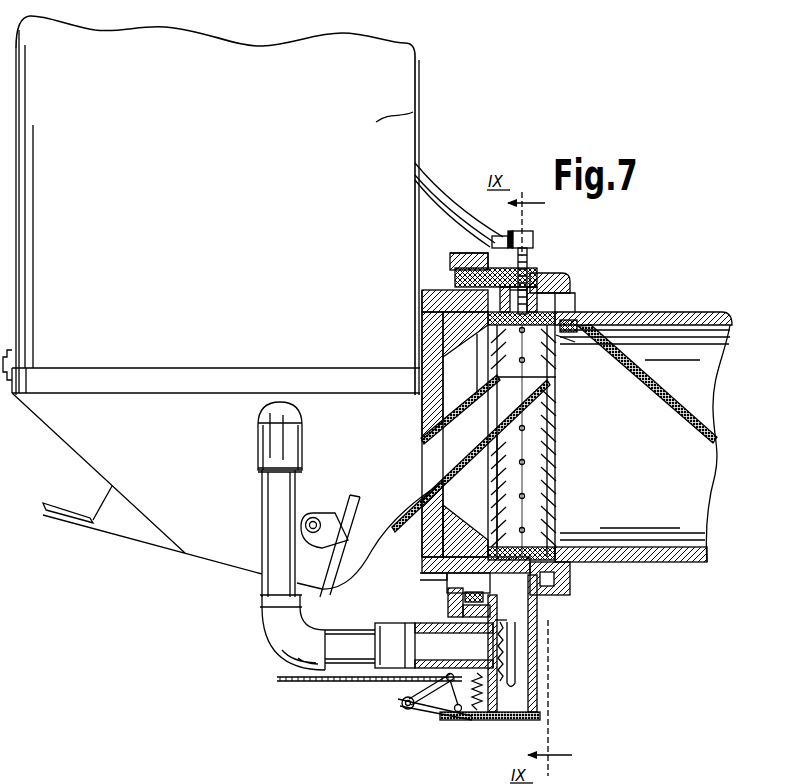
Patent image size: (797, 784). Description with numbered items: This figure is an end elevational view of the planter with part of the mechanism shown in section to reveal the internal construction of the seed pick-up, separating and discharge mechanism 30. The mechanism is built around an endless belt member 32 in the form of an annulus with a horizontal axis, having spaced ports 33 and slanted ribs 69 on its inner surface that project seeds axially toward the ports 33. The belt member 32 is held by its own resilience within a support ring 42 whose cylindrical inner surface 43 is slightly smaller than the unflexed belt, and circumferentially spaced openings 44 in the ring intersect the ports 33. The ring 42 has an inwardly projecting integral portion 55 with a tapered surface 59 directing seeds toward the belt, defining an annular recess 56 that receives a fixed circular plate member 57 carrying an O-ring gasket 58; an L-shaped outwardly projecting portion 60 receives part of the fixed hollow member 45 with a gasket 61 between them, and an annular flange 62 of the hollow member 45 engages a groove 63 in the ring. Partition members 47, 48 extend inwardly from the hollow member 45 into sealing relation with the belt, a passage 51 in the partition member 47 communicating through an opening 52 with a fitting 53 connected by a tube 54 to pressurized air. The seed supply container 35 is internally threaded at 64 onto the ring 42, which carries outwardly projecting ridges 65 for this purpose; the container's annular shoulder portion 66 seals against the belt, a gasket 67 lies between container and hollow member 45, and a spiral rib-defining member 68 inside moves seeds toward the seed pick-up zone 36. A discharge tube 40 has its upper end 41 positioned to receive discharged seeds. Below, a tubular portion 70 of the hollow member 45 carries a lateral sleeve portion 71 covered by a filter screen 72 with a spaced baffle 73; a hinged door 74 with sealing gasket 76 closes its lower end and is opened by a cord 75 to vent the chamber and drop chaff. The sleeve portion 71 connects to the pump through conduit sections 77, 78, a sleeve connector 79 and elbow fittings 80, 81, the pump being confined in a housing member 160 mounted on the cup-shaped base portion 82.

The seed pick-up, separating and discharge mechanism 30 is at (424, 76).
The housing member 160 is at (413, 113).
The base portion 82 is at (138, 455).
The elbow fitting 81 is at (272, 433).
The conduit section 78 is at (280, 537).
The elbow fitting 80 is at (286, 629).
The conduit section 77 is at (356, 649).
The sleeve connector 79 is at (388, 647).
The cord 75 is at (315, 682).
The tubular portion 70 is at (536, 668).
The baffle 73 is at (511, 645).
The filter screen 72 is at (502, 670).
The sealing gasket 76 is at (540, 714).
The sleeve portion 71 is at (418, 684).
The hinged door 74 is at (470, 720).
The partition member 48 is at (476, 582).
The gasket 61 is at (462, 600).
The radially outwardly projecting portion 60 is at (455, 614).
The openings 44 is at (505, 597).
The annular recess 56 is at (427, 328).
The fixed circular plate member 57 is at (424, 413).
The integral portion 55 is at (455, 330).
The partition member 47 is at (462, 258).
The cylindrical inner surface 43 is at (465, 353).
The O-ring gasket 58 is at (442, 550).
The tube 54 is at (442, 196).
The fitting 53 is at (531, 231).
The opening 52 is at (529, 282).
The fixed hollow member 45 is at (538, 276).
The passage 51 is at (540, 280).
The annular flange 62 is at (568, 284).
The gasket 67 is at (545, 280).
The flange 65 is at (572, 296).
The internal threads 64 is at (568, 584).
The groove 63 is at (522, 441).
The discharge tube 40 is at (545, 440).
The upper end 41 is at (565, 385).
The ports 33 is at (547, 460).
The support ring 42 is at (576, 308).
The tapered surface 59 is at (425, 477).
The ribs 69 is at (505, 517).
The seed pick-up zone 36 is at (532, 535).
The seed supply container 35 is at (672, 562).
The belt member 32 is at (548, 436).
The rib-defining member 68 is at (667, 383).
The annular shoulder portion 66 is at (551, 330).